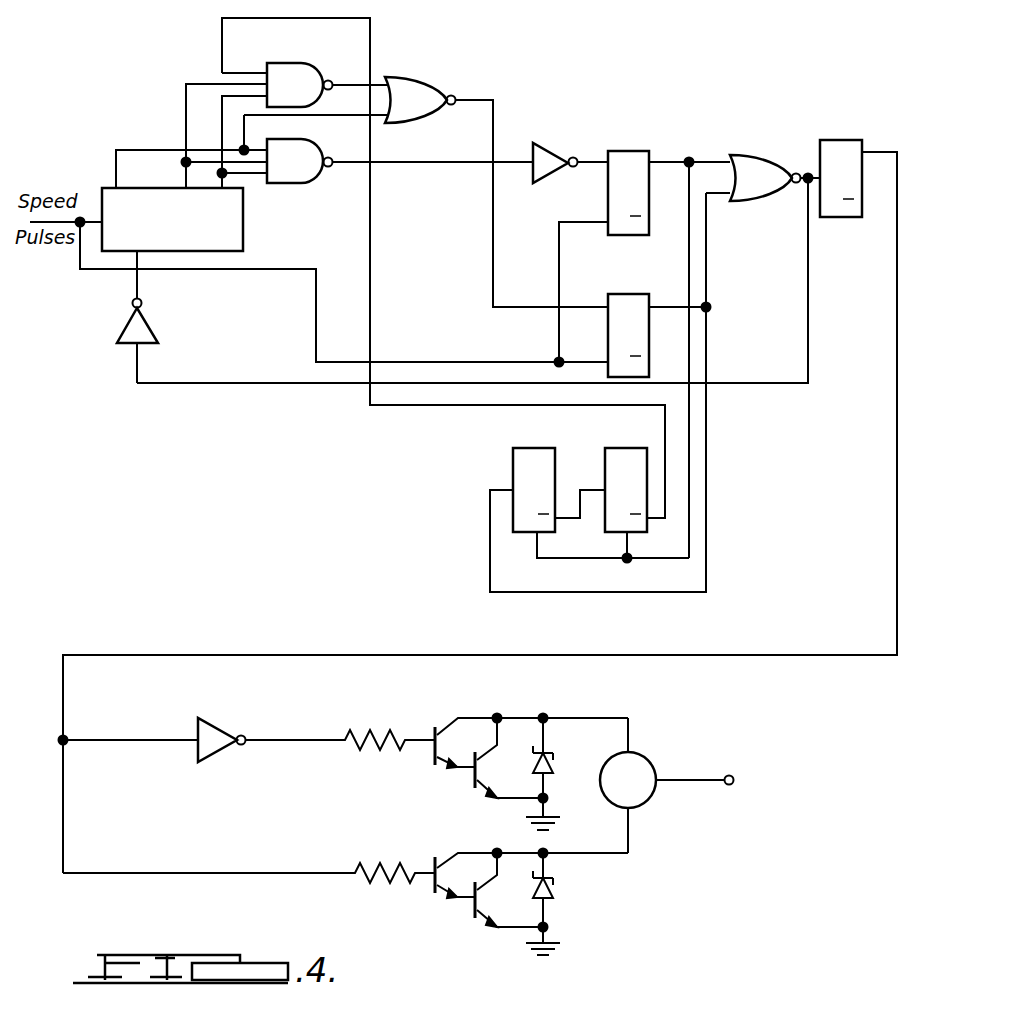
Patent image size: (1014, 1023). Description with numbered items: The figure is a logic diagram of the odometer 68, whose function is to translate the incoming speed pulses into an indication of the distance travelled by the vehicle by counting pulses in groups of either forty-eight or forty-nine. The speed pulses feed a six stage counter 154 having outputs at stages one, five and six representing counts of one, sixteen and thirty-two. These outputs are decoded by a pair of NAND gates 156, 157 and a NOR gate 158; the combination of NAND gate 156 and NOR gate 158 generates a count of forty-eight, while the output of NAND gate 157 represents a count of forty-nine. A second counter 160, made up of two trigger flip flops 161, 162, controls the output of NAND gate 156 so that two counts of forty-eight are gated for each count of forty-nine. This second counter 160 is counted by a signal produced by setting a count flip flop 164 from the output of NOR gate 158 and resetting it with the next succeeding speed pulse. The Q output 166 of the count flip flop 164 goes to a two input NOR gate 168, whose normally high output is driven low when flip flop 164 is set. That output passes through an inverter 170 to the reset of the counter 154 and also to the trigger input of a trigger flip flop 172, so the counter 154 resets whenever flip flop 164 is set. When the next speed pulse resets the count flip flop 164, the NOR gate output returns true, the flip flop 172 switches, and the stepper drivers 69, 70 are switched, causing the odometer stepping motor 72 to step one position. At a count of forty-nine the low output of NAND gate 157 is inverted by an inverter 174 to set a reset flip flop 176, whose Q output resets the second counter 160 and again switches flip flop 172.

The six stage counter 154 is at (244, 245).
The NAND gate 156 is at (320, 50).
The NAND gate 157 is at (300, 187).
The NOR gate 158 is at (428, 79).
The second counter 160 is at (577, 488).
The trigger flip flop 161 is at (528, 447).
The trigger flip flop 162 is at (631, 473).
The count flip flop 164 is at (618, 295).
The Q output 166 is at (665, 290).
The two input NOR gate 168 is at (768, 157).
The inverter 170 is at (148, 324).
The trigger flip flop 172 is at (838, 140).
The inverter 174 is at (553, 145).
The reset flip flop 176 is at (639, 150).
The odometer 68 is at (654, 156).
The stepper driver 69 is at (434, 721).
The stepper driver 70 is at (456, 848).
The odometer stepping motor 72 is at (650, 755).